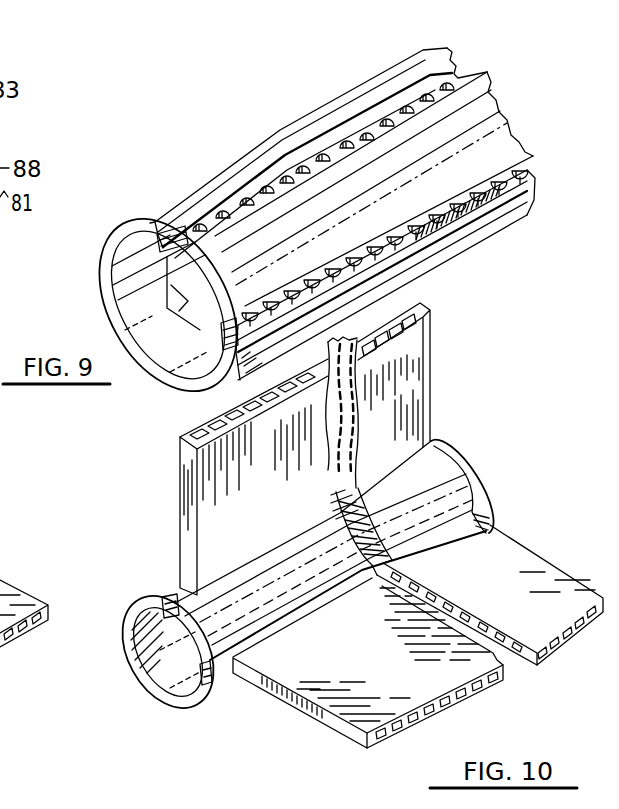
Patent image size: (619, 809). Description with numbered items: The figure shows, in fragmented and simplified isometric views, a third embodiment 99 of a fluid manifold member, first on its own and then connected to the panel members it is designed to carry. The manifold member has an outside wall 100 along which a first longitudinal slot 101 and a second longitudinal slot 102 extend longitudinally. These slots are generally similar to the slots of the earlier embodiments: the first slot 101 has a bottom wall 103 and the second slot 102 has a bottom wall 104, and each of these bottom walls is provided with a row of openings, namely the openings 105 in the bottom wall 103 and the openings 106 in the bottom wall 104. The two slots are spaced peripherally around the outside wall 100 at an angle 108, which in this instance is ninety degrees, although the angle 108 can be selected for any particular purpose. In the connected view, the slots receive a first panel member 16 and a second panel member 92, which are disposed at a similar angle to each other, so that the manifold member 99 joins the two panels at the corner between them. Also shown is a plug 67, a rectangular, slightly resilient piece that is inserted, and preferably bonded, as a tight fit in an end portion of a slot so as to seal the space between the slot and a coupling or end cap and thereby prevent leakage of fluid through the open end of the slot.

In FIG. 10, the first panel member 16 is at (530, 584).
In FIG. 10, the plug 67 is at (437, 448).
In FIG. 10, the second panel member 92 is at (411, 375).
In FIG. 9, the third embodiment of a fluid manifold member 99 is at (264, 114).
In FIG. 10, the third embodiment of a fluid manifold member 99 is at (466, 483).
In FIG. 9, the outside wall 100 is at (512, 141).
In FIG. 9, the first longitudinal slot 101 is at (393, 247).
In FIG. 10, the first longitudinal slot 101 is at (205, 680).
In FIG. 9, the second longitudinal slot 102 is at (458, 74).
In FIG. 10, the second longitudinal slot 102 is at (150, 673).
In FIG. 9, the bottom wall of the first slot 103 is at (220, 338).
In FIG. 10, the bottom wall of the first slot 103 is at (238, 712).
In FIG. 9, the bottom wall of the second slot 104 is at (240, 204).
In FIG. 10, the bottom wall of the second slot 104 is at (143, 677).
In FIG. 9, the openings in the first slot bottom wall 105 is at (491, 185).
In FIG. 9, the openings in the second slot bottom wall 106 is at (200, 228).
In FIG. 9, the angle 108 is at (188, 282).